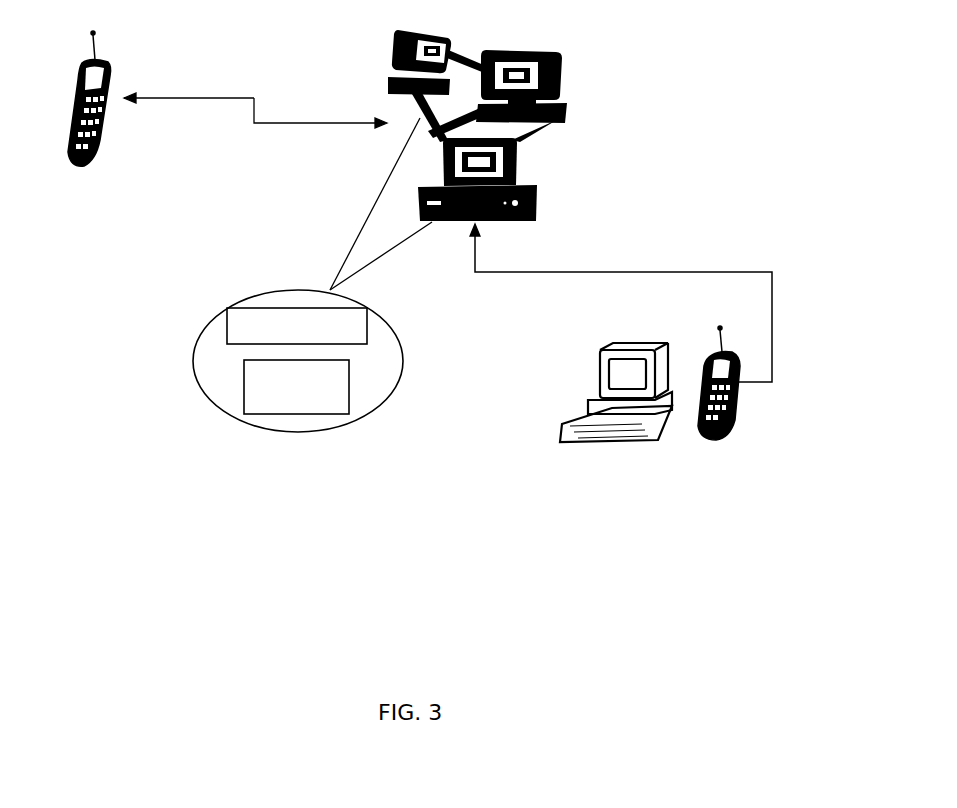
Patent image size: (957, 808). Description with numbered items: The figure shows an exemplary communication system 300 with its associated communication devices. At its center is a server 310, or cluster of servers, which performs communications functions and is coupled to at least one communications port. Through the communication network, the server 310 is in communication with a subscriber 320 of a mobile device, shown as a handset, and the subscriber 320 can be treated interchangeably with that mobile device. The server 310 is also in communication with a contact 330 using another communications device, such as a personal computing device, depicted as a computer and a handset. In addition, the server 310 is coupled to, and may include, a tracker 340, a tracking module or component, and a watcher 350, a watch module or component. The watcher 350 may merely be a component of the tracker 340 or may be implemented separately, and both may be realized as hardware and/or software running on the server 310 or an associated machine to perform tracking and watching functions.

The system 300 is at (190, 642).
The server 310 is at (560, 98).
The subscriber 320 is at (123, 134).
The contact 330 is at (576, 447).
The tracker 340 is at (227, 326).
The watcher 350 is at (244, 378).